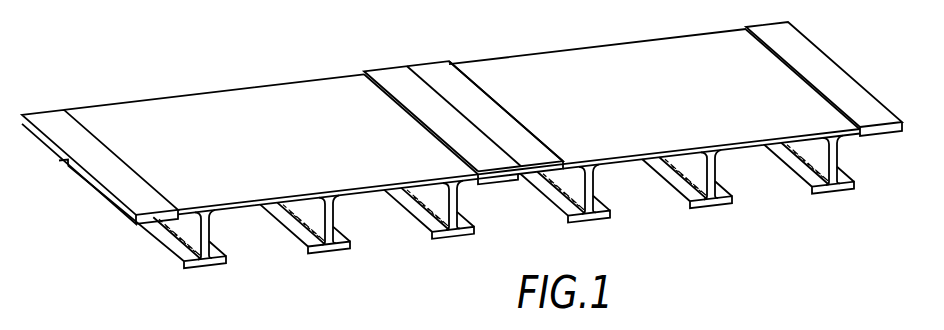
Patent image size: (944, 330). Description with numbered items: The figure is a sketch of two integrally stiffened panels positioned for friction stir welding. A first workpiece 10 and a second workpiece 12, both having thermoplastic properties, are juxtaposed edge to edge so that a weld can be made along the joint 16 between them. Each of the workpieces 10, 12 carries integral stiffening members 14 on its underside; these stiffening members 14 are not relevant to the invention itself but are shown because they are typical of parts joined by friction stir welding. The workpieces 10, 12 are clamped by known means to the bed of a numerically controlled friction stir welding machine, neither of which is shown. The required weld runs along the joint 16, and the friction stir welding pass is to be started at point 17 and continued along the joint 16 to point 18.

The first workpiece 10 is at (259, 152).
The second workpiece 12 is at (652, 104).
The integral stiffening members 14 is at (210, 266).
The joint 16 is at (457, 110).
The start point 17 is at (497, 150).
The end point 18 is at (423, 82).